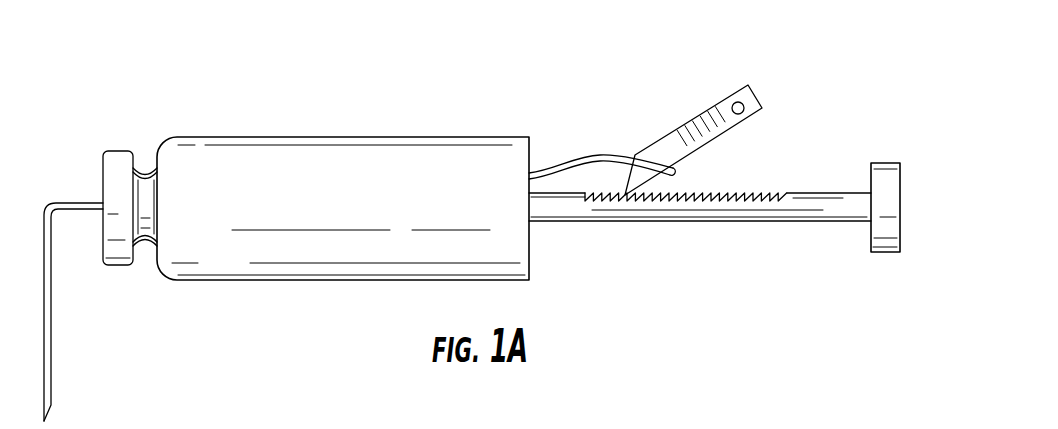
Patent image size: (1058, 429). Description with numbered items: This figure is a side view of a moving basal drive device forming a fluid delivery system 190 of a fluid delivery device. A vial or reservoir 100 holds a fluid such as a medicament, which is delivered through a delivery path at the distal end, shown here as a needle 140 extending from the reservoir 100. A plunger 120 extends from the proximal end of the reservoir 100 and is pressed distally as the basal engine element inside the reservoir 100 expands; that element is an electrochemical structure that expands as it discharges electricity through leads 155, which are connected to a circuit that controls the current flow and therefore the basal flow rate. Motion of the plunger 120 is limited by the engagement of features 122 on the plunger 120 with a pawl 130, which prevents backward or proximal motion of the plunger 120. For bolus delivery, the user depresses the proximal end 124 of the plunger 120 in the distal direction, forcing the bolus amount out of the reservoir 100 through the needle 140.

The fluid delivery system 190 is at (275, 46).
The reservoir 100 is at (262, 137).
The needle 140 is at (51, 358).
The plunger 120 is at (668, 221).
The features 122 is at (710, 193).
The proximal end of plunger 124 is at (902, 197).
The pawl 130 is at (760, 95).
The leads 155 is at (565, 165).